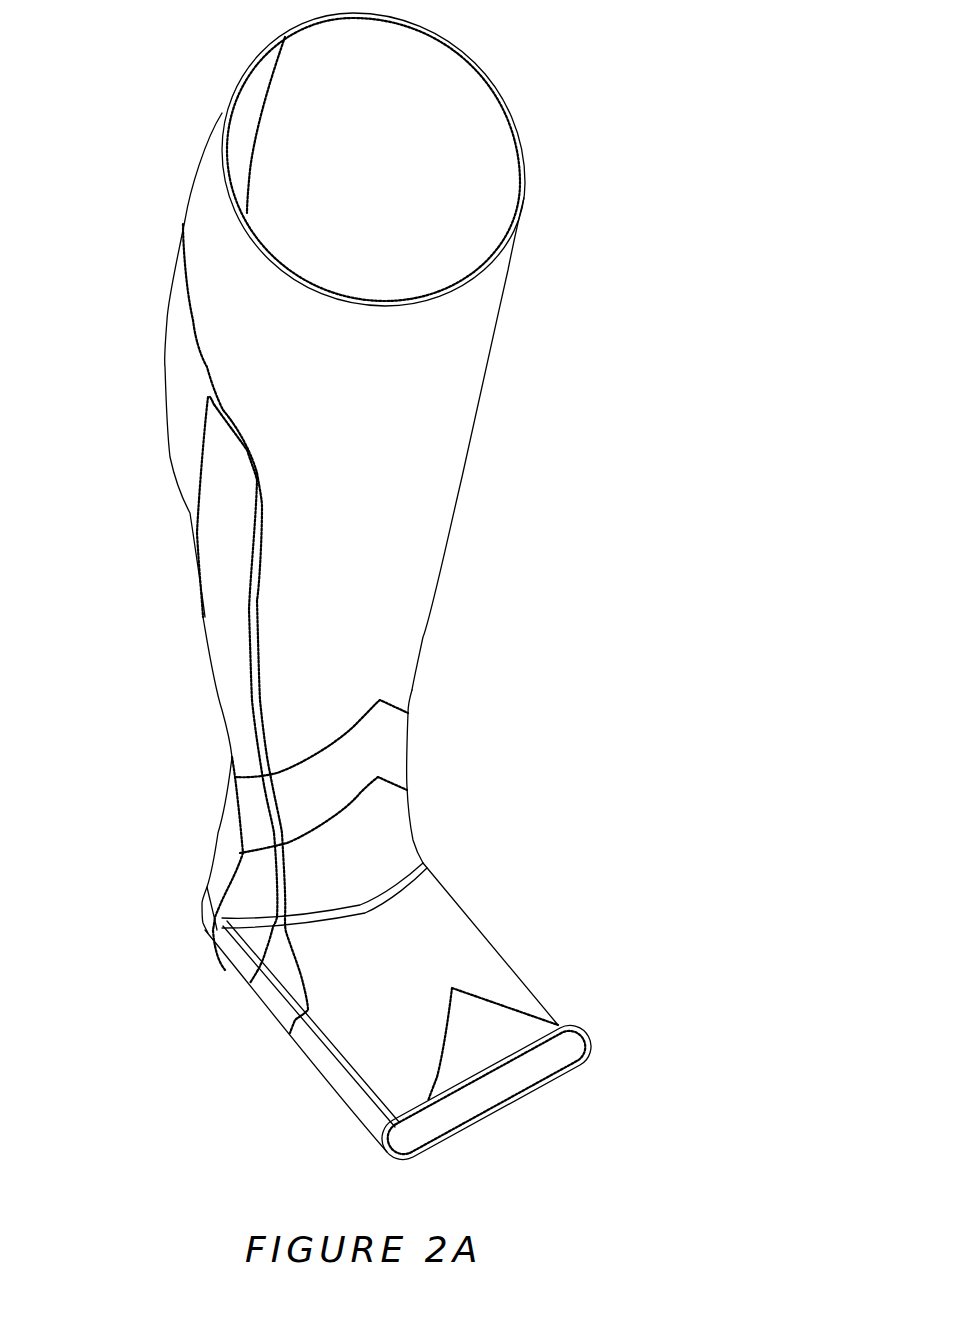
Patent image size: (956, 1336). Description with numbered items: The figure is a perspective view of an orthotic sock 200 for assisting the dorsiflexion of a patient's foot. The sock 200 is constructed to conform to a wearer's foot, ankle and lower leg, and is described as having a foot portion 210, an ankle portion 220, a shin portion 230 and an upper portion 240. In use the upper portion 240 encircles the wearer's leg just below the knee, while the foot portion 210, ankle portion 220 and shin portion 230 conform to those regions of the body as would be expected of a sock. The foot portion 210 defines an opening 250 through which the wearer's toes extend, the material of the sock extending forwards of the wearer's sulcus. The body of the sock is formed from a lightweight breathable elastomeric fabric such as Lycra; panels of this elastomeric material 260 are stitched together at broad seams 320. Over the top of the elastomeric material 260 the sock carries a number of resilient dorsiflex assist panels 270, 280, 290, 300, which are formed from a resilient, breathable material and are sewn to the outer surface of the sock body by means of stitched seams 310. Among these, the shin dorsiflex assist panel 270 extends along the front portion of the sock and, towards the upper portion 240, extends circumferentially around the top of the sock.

The sock 200 is at (527, 340).
The foot portion 210 is at (508, 944).
The ankle portion 220 is at (191, 870).
The shin portion 230 is at (437, 653).
The upper portion 240 is at (189, 160).
The opening 250 is at (572, 1057).
The elastomeric material 260 is at (167, 380).
The shin dorsiflex assist panel 270 is at (435, 490).
The dorsiflex assist panel 280 is at (225, 573).
The dorsiflex assist panel 290 is at (395, 747).
The dorsiflex assist panel 300 is at (427, 903).
The stitched seams 310 is at (392, 308).
The broad seams 320 is at (352, 912).